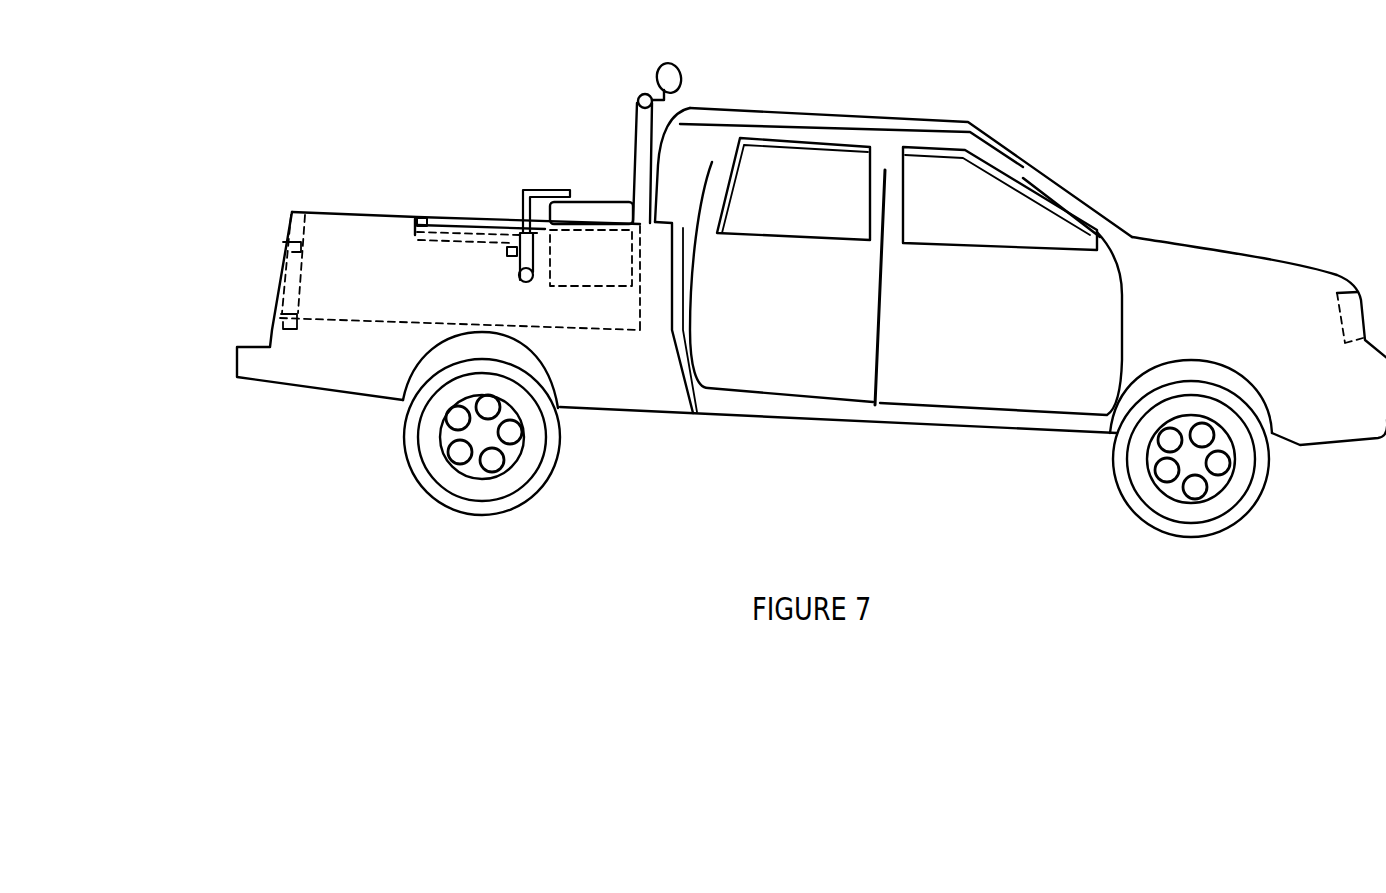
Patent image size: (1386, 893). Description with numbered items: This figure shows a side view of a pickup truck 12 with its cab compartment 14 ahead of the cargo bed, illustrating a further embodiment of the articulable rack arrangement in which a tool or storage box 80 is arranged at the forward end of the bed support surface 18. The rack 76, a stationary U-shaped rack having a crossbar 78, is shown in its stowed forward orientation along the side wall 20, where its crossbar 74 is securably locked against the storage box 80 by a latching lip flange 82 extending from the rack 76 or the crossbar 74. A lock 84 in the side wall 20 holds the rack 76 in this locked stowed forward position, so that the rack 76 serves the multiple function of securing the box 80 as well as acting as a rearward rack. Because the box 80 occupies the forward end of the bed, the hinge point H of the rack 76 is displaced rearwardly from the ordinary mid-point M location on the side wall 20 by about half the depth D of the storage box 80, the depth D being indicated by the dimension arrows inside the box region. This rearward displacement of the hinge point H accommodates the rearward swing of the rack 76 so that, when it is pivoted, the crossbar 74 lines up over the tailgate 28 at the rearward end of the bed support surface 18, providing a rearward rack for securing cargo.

The pickup truck 12 is at (1190, 238).
The cab compartment 14 is at (828, 105).
The bed support surface 18 is at (368, 322).
The side wall 20 is at (335, 297).
The tailgate 28 is at (280, 273).
The crossbar 74 is at (531, 288).
The rack 76 is at (480, 231).
The crossbar 78 is at (634, 74).
The tool or storage box 80 is at (599, 196).
The latching lip flange 82 is at (542, 186).
The lock 84 is at (509, 262).
The mid-point M is at (461, 210).
The hinge point H is at (416, 215).
The depth of the storage box D is at (630, 248).